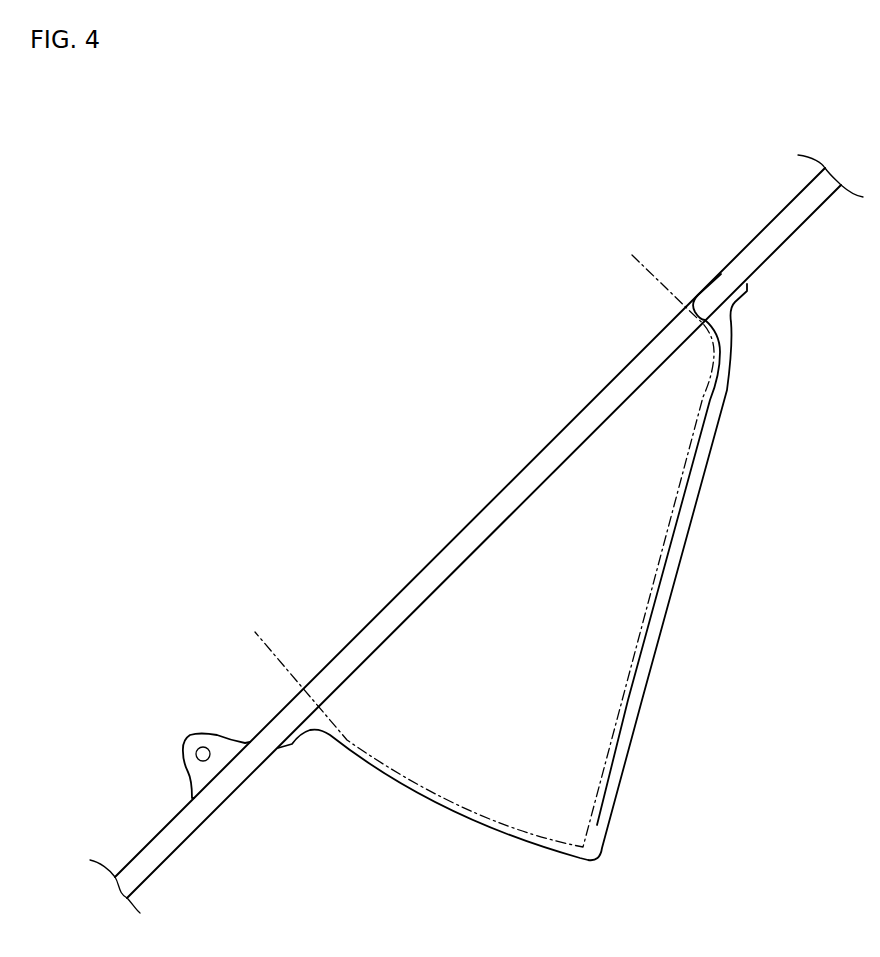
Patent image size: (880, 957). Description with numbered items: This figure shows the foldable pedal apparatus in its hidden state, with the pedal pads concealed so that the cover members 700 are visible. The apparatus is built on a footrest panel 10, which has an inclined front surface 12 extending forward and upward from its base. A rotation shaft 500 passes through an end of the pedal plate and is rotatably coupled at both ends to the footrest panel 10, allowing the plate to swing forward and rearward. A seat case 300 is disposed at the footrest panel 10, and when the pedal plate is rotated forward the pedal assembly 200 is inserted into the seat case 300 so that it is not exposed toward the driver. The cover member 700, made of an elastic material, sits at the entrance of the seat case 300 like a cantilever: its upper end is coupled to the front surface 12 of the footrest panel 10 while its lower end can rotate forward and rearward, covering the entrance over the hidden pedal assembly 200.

The footrest panel 10 is at (776, 194).
The inclined front surface 12 is at (162, 847).
The pedal assembly 200 is at (662, 280).
The seat case 300 is at (632, 745).
The rotation shaft 500 is at (199, 748).
The cover member 700 is at (642, 663).